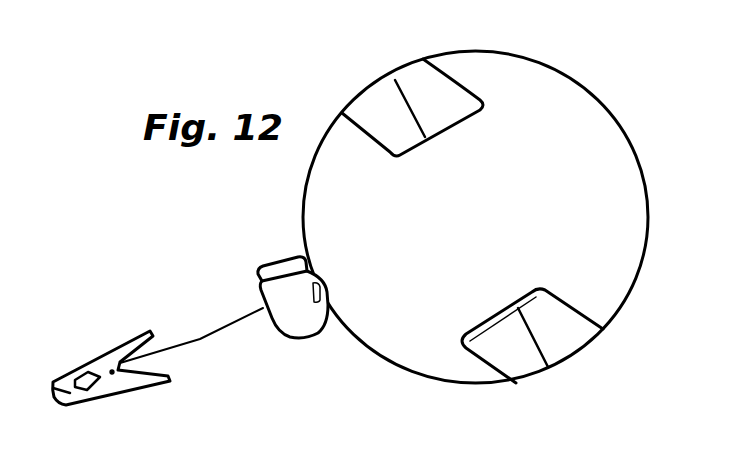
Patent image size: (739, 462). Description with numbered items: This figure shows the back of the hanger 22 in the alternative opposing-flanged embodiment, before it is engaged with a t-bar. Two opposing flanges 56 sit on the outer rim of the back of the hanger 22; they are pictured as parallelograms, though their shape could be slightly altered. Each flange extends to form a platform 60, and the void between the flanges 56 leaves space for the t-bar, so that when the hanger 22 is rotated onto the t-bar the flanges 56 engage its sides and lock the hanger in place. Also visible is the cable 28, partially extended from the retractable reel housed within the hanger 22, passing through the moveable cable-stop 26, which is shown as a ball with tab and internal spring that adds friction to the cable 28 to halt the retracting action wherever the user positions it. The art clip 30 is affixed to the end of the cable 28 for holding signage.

The hanger 22 is at (612, 109).
The cable-stop 26 is at (296, 338).
The cable 28 is at (214, 340).
The art clip 30 is at (174, 378).
The opposing flanges 56 is at (484, 106).
The platform 60 is at (442, 197).